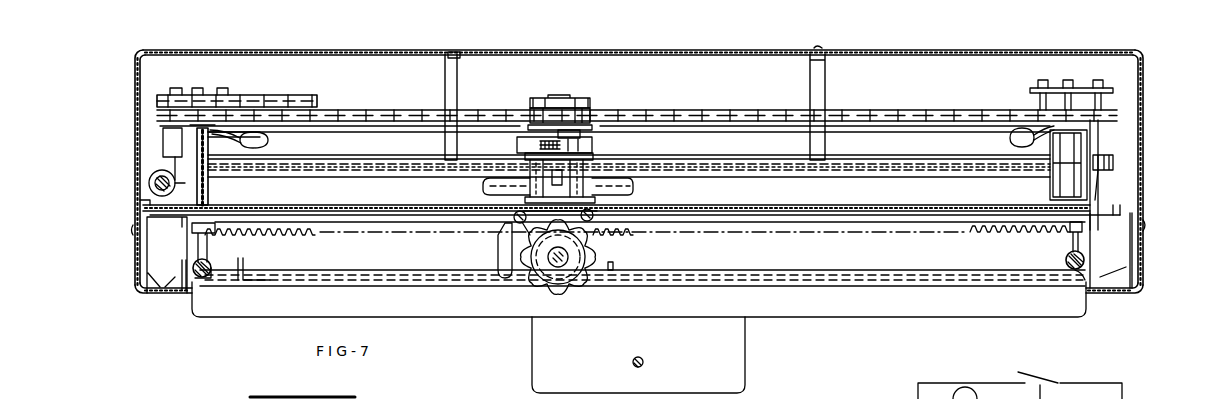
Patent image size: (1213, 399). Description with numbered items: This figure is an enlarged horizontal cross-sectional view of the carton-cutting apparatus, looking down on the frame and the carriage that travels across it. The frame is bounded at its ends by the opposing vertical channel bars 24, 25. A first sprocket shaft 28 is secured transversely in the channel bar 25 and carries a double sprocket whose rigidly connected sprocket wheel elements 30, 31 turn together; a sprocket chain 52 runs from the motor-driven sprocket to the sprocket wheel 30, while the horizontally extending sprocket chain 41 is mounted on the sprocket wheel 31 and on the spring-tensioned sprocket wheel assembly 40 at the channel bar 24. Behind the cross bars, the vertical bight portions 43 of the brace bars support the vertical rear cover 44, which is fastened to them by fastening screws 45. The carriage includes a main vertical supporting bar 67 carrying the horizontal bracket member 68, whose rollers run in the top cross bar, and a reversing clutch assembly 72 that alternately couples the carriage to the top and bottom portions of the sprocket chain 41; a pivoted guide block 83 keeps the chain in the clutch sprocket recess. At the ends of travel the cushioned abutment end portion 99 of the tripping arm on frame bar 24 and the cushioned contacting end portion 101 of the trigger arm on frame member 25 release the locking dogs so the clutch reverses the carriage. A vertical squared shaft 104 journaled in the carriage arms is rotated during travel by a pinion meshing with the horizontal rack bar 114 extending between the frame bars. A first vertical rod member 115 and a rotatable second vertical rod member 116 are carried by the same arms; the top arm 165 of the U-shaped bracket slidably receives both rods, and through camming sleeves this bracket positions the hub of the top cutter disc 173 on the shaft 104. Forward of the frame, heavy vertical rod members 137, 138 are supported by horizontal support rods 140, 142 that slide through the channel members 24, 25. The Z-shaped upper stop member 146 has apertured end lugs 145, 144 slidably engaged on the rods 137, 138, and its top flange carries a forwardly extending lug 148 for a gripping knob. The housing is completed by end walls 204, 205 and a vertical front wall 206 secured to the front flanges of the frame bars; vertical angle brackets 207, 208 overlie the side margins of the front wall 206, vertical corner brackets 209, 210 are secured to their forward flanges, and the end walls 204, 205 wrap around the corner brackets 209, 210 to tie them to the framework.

The vertical channel bar 24 is at (167, 255).
The vertical channel bar 25 is at (1090, 142).
The first sprocket shaft 28 is at (210, 190).
The sprocket wheel element 30 is at (165, 95).
The sprocket wheel element 31 is at (163, 130).
The sprocket wheel assembly 40 is at (1115, 100).
The sprocket chain 41 is at (692, 108).
The vertical bight portions 43 is at (443, 65).
The vertical rear cover 44 is at (565, 50).
The fastening screws 45 is at (455, 52).
The sprocket chain 52 is at (290, 95).
The main vertical supporting bar 67 is at (492, 197).
The horizontal bracket member 68 is at (517, 147).
The reversing clutch assembly 72 is at (602, 121).
The guide block 83 is at (568, 112).
The cushioned abutment end portion 99 is at (1010, 140).
The cushioned contacting end portion 101 is at (268, 148).
The vertical squared shaft 104 is at (556, 262).
The horizontal rack bar 114 is at (297, 236).
The first vertical rod member 115 is at (605, 238).
The second vertical rod member 116 is at (507, 233).
The vertical rod member 137 is at (185, 295).
The vertical rod member 138 is at (1084, 272).
The horizontal support rod 140 is at (210, 248).
The horizontal support rod 142 is at (1070, 242).
The apertured end lug 144 is at (1062, 258).
The apertured end lug 145 is at (193, 266).
The upper stop member 146 is at (848, 312).
The forwardly extending lug 148 is at (745, 366).
The top arm 165 is at (610, 209).
The top cutter disc 173 is at (580, 292).
The end wall 204 is at (135, 156).
The end wall 205 is at (1143, 115).
The vertical front wall 206 is at (758, 204).
The vertical angle bracket 207 is at (148, 203).
The vertical angle bracket 208 is at (1125, 208).
The vertical corner bracket 209 is at (138, 266).
The vertical corner bracket 210 is at (1143, 252).